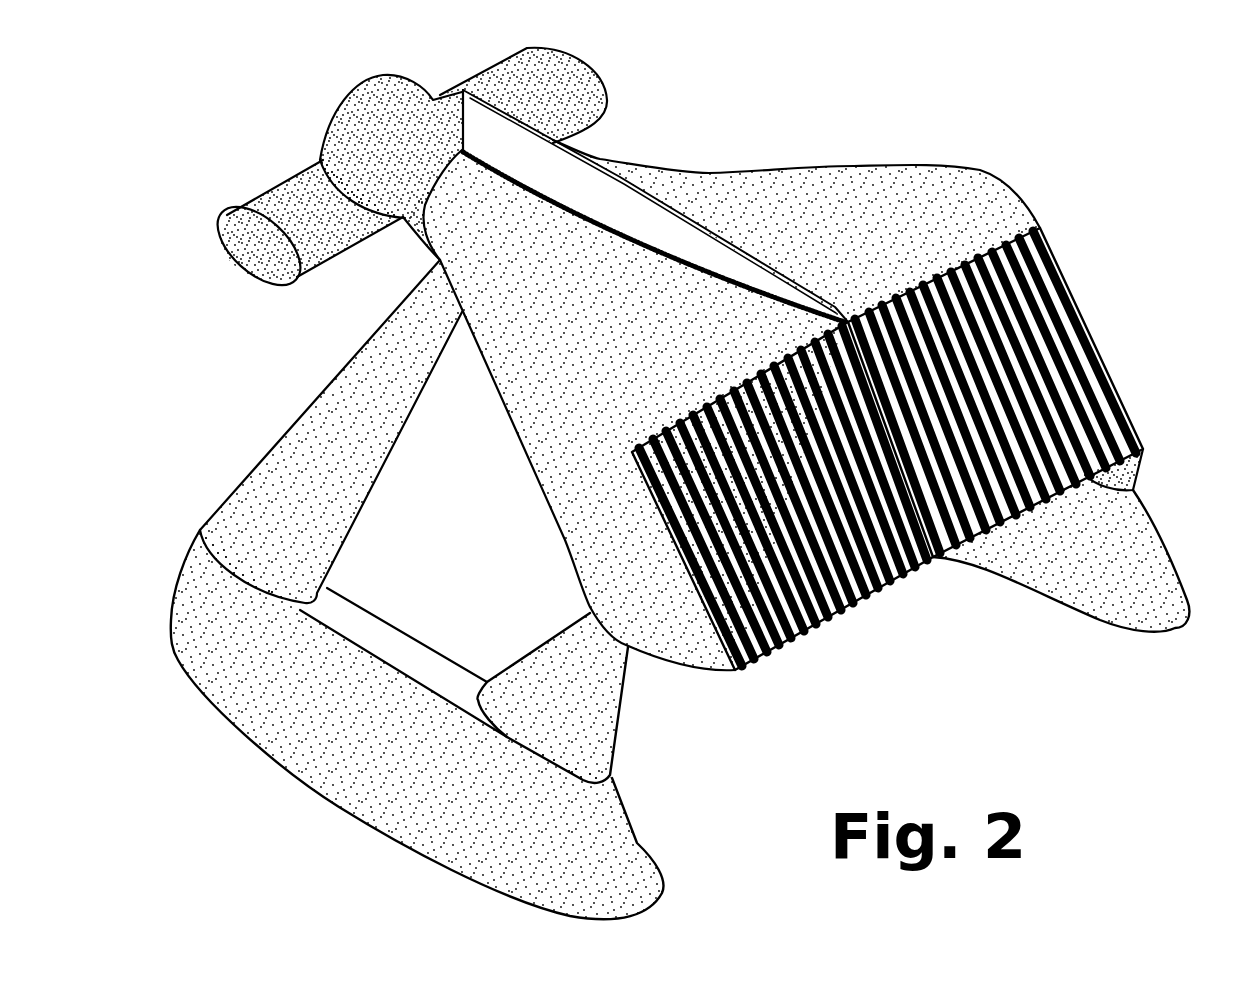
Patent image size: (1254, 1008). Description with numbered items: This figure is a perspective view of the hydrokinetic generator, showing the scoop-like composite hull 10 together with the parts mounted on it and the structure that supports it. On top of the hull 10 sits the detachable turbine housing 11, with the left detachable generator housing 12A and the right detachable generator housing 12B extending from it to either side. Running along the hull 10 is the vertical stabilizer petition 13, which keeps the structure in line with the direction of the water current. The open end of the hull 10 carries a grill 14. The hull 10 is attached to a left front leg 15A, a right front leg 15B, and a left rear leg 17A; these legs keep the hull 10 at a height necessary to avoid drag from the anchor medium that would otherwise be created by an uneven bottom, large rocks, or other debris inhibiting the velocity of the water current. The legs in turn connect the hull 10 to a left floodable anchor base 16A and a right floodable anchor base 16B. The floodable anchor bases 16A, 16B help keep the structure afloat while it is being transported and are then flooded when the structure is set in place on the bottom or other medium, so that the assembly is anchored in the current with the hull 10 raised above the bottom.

The scoop-like composite hull 10 is at (975, 176).
The detachable turbine housing 11 is at (405, 88).
The left detachable generator housing 12A is at (268, 198).
The right detachable generator housing 12B is at (618, 62).
The vertical stabilizer petition 13 is at (572, 146).
The grill 14 is at (823, 620).
The left front leg 15A is at (622, 705).
The right front leg 15B is at (1128, 468).
The left floodable anchor base 16A is at (633, 839).
The right floodable anchor base 16B is at (1183, 600).
The left rear leg 17A is at (435, 357).